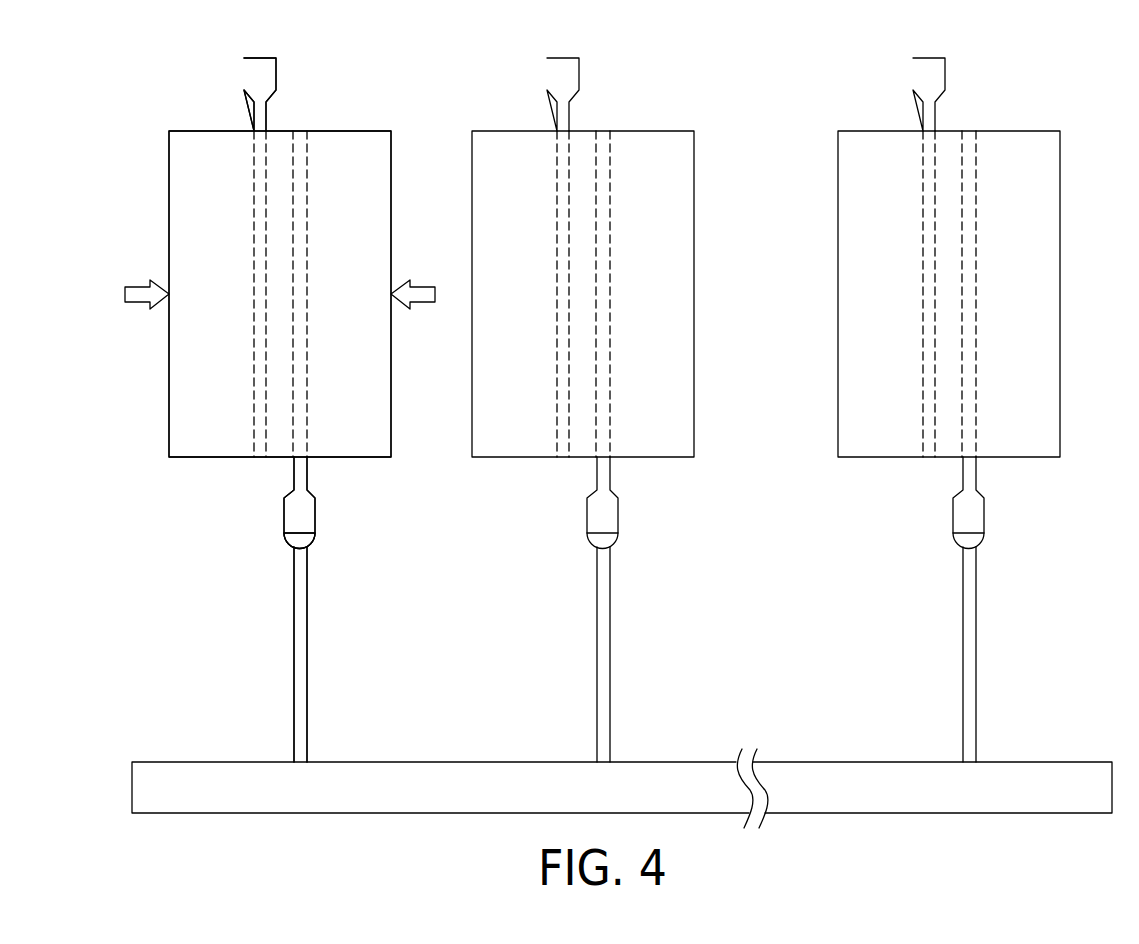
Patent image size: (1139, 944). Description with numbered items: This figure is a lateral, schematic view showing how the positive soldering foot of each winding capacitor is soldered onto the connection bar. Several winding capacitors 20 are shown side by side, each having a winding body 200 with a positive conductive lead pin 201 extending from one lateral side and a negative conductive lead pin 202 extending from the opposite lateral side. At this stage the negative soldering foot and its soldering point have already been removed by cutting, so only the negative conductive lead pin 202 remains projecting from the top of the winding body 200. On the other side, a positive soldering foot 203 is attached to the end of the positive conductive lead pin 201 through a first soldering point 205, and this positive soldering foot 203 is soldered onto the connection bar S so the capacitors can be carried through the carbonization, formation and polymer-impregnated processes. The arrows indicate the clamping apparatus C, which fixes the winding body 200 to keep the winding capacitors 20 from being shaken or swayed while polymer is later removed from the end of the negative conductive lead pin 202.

The winding capacitor 20 is at (361, 120).
The winding body 200 is at (190, 234).
The positive conductive lead pin 201 is at (298, 497).
The negative conductive lead pin 202 is at (253, 76).
The positive soldering foot 203 is at (298, 615).
The first soldering point 205 is at (292, 540).
The clamping apparatus C is at (135, 315).
The connection bar S is at (417, 748).